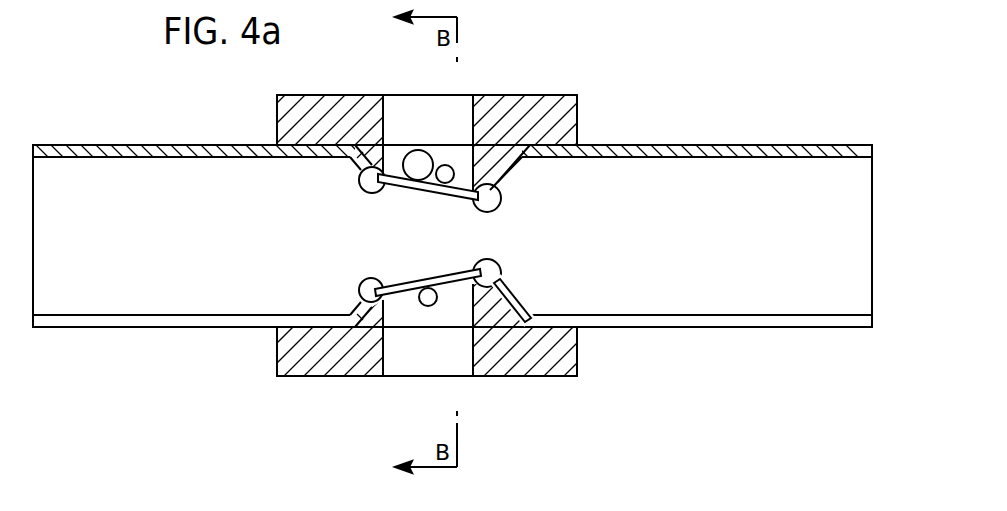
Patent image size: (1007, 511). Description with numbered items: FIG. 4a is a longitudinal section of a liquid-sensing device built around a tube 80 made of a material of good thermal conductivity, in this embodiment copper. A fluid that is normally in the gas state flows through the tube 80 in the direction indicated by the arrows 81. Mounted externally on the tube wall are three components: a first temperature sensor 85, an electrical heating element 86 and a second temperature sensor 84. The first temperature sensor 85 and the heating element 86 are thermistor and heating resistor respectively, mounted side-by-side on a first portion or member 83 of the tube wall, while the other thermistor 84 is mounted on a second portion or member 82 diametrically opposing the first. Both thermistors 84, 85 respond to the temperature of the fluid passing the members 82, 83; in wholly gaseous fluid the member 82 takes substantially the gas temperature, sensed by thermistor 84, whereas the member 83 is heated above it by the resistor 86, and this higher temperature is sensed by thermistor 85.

The tube 80 is at (698, 145).
The arrows 81 is at (214, 237).
The second portion of the tube wall 82 is at (423, 283).
The first portion of the tube wall 83 is at (423, 190).
The second temperature sensor 84 is at (430, 306).
The first temperature sensor 85 is at (445, 168).
The electrical heating element 86 is at (415, 158).